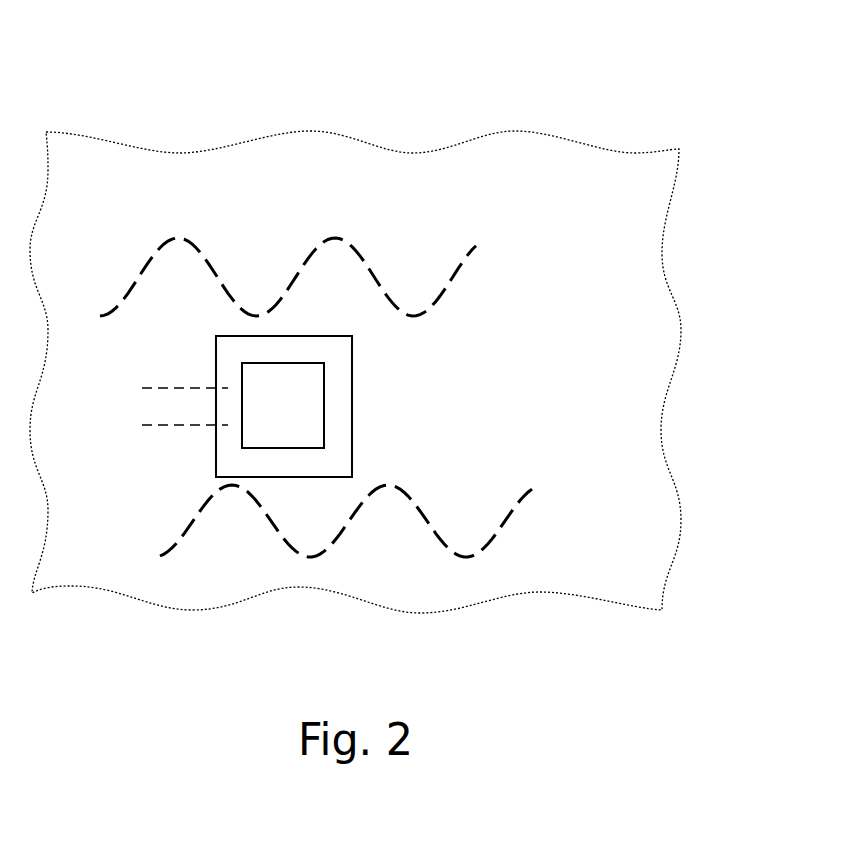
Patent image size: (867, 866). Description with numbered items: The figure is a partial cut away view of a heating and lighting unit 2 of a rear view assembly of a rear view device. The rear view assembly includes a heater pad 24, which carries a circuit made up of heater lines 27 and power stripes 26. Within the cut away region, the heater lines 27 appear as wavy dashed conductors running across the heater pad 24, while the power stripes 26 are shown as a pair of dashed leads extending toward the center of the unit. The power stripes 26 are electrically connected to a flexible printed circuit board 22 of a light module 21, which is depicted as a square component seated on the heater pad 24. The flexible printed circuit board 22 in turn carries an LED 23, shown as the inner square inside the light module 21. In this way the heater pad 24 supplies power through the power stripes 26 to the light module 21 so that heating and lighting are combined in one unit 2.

The heating and lighting unit 2 is at (718, 123).
The light module 21 is at (375, 410).
The flexible printed circuit board 22 is at (293, 352).
The LED 23 is at (302, 420).
The heater pad 24 is at (416, 560).
The power stripes 26 is at (159, 426).
The heater lines 27 is at (462, 270).